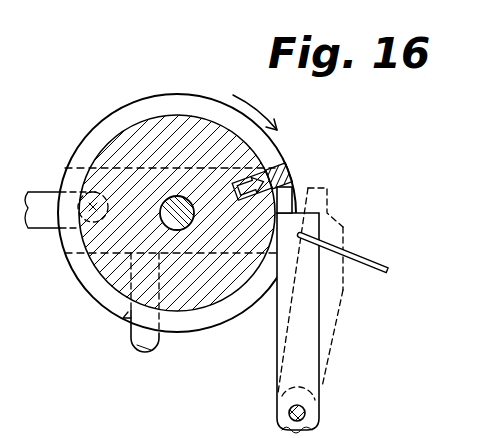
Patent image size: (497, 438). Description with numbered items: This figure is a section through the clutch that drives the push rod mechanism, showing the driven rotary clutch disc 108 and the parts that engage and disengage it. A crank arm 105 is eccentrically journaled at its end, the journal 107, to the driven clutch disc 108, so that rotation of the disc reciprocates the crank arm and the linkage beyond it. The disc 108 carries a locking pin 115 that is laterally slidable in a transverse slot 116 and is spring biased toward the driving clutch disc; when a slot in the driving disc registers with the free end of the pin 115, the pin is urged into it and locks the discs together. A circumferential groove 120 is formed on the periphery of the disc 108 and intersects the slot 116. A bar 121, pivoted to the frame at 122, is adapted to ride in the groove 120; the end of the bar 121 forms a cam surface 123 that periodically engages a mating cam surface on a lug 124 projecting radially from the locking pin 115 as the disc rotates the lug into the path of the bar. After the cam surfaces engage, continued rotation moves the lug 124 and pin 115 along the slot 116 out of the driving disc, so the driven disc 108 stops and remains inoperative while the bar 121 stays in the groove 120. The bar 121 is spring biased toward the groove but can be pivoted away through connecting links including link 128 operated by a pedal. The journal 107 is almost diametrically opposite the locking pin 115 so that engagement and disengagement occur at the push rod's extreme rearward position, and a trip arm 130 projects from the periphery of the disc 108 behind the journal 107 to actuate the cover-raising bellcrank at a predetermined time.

The crank arm 105 is at (38, 200).
The journal 107 is at (86, 192).
The driven rotary clutch disc 108 is at (147, 96).
The locking pin 115 is at (265, 170).
The slot 116 is at (282, 166).
The circumferential groove 120 is at (128, 312).
The bar 121 is at (322, 313).
The pivot 122 is at (305, 413).
The cam surface 123 is at (301, 190).
The lug 124 is at (289, 187).
The connecting link 128 is at (358, 258).
The trip arm 130 is at (150, 340).